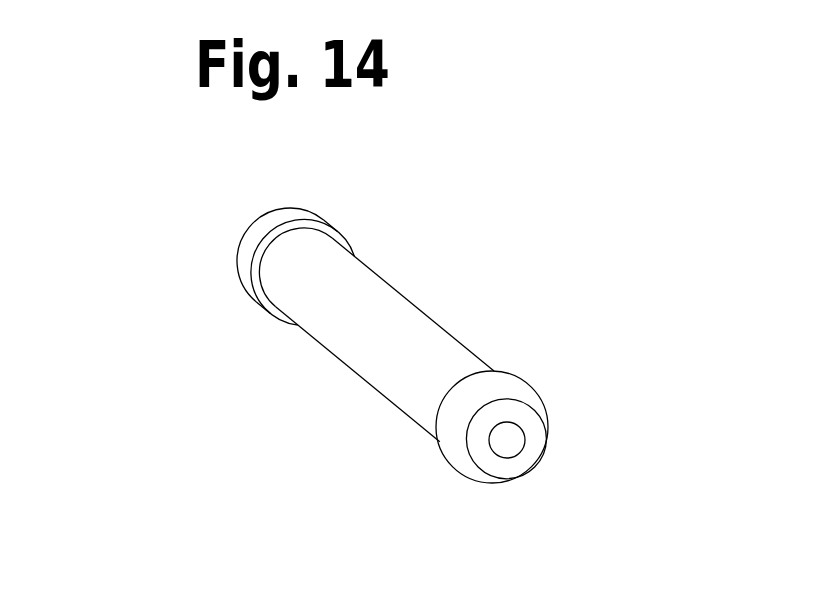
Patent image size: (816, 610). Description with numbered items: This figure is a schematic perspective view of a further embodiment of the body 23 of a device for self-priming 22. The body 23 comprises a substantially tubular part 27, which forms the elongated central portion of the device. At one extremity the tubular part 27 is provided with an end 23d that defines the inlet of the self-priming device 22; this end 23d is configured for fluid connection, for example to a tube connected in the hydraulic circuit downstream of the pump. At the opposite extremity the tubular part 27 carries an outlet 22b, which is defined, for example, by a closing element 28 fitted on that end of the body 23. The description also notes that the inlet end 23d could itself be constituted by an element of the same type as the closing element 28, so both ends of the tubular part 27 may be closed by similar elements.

The self-priming device 22 is at (400, 360).
The outlet 22b is at (510, 442).
The body 23 is at (400, 371).
The end 23d is at (262, 232).
The tubular part 27 is at (357, 358).
The closing element 28 is at (579, 423).